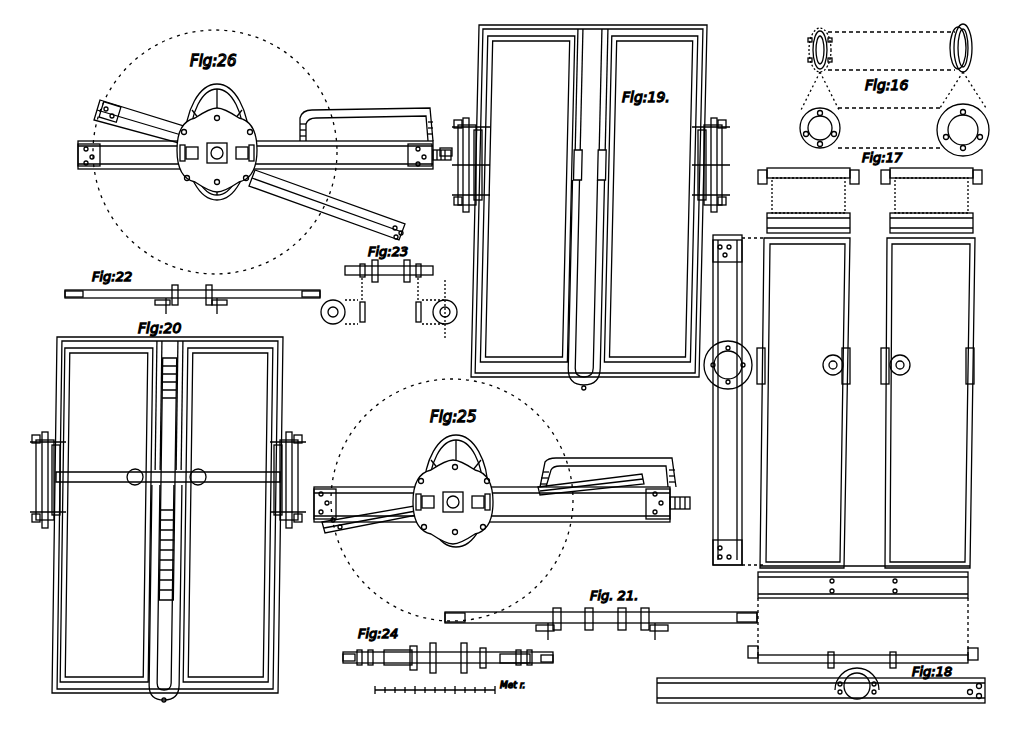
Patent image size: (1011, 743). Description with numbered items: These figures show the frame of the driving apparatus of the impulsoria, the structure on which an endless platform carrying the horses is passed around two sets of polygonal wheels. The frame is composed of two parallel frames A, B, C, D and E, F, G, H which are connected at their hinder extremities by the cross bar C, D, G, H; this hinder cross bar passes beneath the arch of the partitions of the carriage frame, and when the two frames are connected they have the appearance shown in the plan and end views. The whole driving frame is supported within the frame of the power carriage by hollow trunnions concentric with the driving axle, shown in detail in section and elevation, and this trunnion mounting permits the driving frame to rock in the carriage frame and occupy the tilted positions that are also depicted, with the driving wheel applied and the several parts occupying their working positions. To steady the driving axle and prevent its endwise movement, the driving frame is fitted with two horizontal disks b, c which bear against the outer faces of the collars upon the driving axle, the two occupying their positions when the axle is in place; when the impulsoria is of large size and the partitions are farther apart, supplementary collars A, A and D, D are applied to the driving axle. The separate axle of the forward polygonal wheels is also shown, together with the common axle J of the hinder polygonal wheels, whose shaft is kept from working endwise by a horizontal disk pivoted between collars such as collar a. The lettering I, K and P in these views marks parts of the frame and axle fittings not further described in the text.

In FIG. 26, the parallel frame A is at (264, 149).
In FIG. 25, the parallel frame A is at (502, 502).
In FIG. 19, the parallel frame A is at (572, 386).
In FIG. 20, the parallel frame A is at (158, 700).
In FIG. 16, the parallel frame A is at (963, 90).
In FIG. 17, the parallel frame A is at (876, 211).
In FIG. 21, the parallel frame A is at (601, 614).
In FIG. 22, the parallel frame A is at (192, 291).
In FIG. 23, the parallel frame A is at (389, 269).
In FIG. 24, the parallel frame A is at (448, 657).
In FIG. 26, the parallel frame B is at (217, 139).
In FIG. 25, the parallel frame B is at (453, 488).
In FIG. 16, the parallel frame B is at (968, 118).
In FIG. 17, the parallel frame B is at (805, 403).
In FIG. 21, the parallel frame B is at (591, 603).
In FIG. 22, the parallel frame B is at (199, 281).
In FIG. 23, the parallel frame B is at (397, 261).
In FIG. 24, the parallel frame B is at (439, 645).
In FIG. 16, the hinder cross bar C is at (820, 86).
In FIG. 17, the hinder cross bar C is at (728, 410).
In FIG. 21, the hinder cross bar C is at (620, 603).
In FIG. 23, the hinder cross bar C is at (389, 297).
In FIG. 24, the hinder cross bar C is at (469, 645).
In FIG. 16, the hinder cross bar D is at (819, 157).
In FIG. 17, the hinder cross bar D is at (833, 557).
In FIG. 21, the hinder cross bar D is at (643, 603).
In FIG. 24, the hinder cross bar D is at (487, 645).
In FIG. 17, the parallel frame E is at (899, 250).
In FIG. 21, the parallel frame E is at (601, 631).
In FIG. 22, the parallel frame E is at (184, 308).
In FIG. 17, the parallel frame F is at (930, 403).
In FIG. 24, the parallel frame H is at (451, 645).
In FIG. 24, the collar I is at (449, 645).
In FIG. 24, the axle of the hinder polygonal wheels J is at (448, 645).
In FIG. 17, the frame K is at (954, 562).
In FIG. 18, the pivot P is at (821, 685).
In FIG. 17, the collar a is at (893, 557).
In FIG. 17, the horizontal disk b is at (866, 359).
In FIG. 17, the horizontal disk c is at (832, 385).